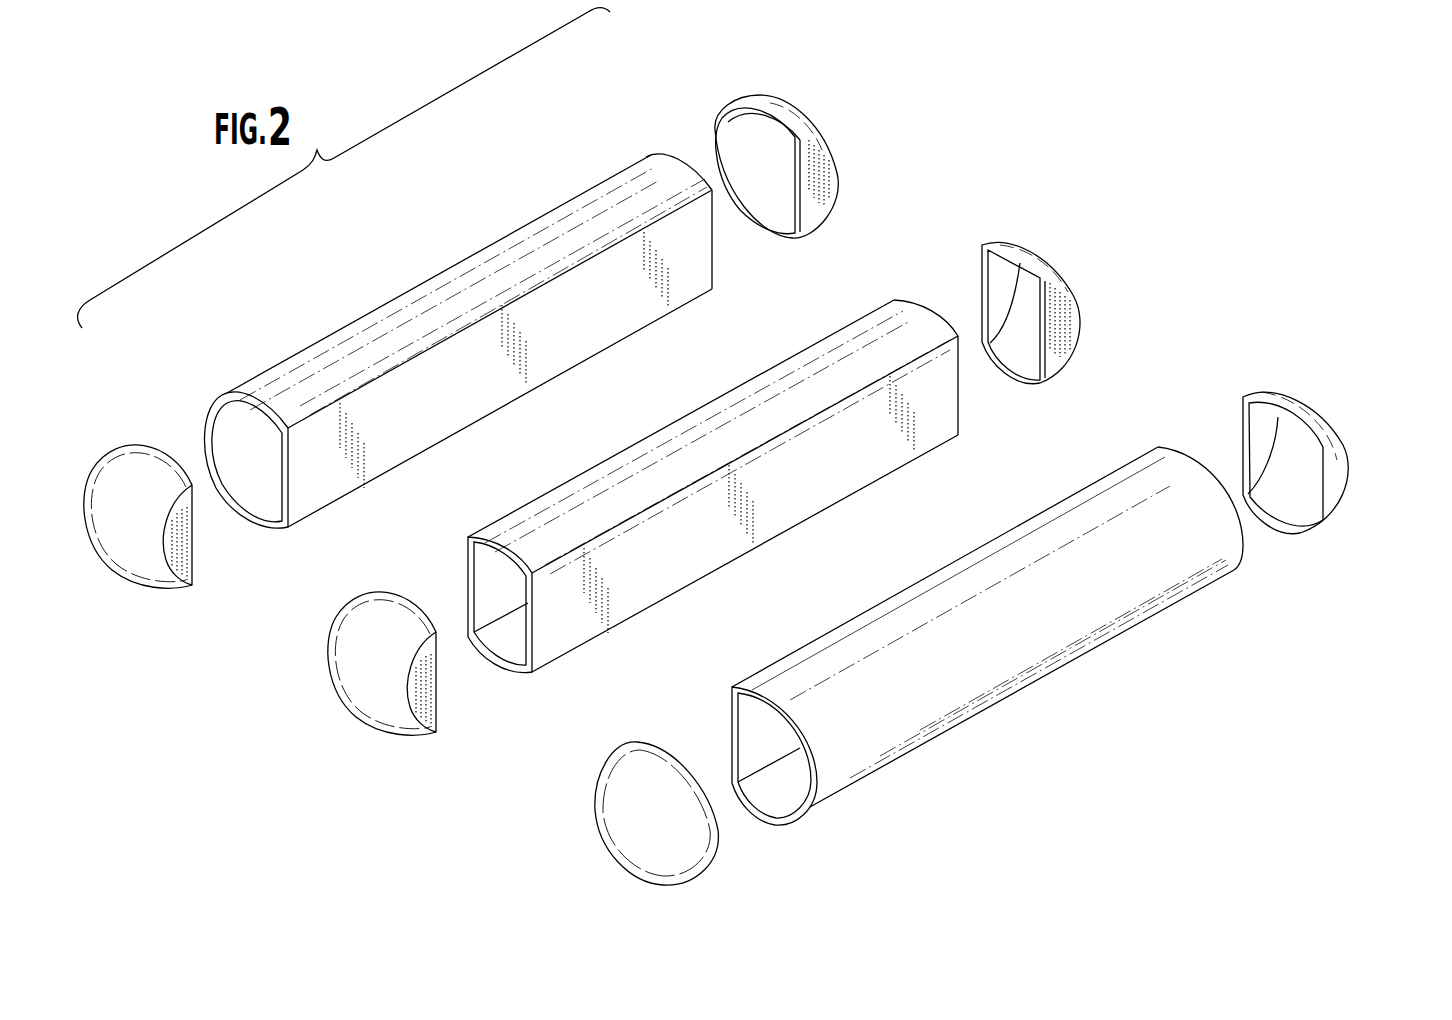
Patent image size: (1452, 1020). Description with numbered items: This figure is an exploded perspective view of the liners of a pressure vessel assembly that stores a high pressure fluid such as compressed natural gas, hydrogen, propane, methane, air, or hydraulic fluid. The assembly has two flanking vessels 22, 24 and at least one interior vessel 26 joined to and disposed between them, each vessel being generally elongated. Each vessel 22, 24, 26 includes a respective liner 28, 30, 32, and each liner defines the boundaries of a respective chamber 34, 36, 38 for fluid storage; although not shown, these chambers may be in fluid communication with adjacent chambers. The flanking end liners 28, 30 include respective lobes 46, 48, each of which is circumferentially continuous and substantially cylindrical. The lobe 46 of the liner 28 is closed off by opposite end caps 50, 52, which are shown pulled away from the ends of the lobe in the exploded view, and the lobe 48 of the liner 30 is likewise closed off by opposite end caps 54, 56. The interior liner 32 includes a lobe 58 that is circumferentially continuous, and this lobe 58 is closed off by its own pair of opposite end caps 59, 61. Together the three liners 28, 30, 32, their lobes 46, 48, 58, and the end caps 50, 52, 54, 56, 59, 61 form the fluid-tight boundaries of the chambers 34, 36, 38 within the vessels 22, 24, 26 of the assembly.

The flanking vessel 22 is at (837, 83).
The flanking vessel 24 is at (1348, 388).
The interior vessel 26 is at (1097, 232).
The liner 28 is at (335, 305).
The liner 30 is at (831, 596).
The interior liner 32 is at (588, 437).
The chamber 34 is at (268, 457).
The chamber 36 is at (773, 753).
The chamber 38 is at (519, 602).
The lobe 46 is at (410, 460).
The lobe 48 is at (922, 758).
The end cap 50 is at (168, 587).
The end cap 52 is at (823, 127).
The end cap 54 is at (688, 881).
The end cap 56 is at (1338, 433).
The lobe 58 is at (645, 608).
The end cap 59 is at (410, 733).
The end cap 61 is at (1070, 285).